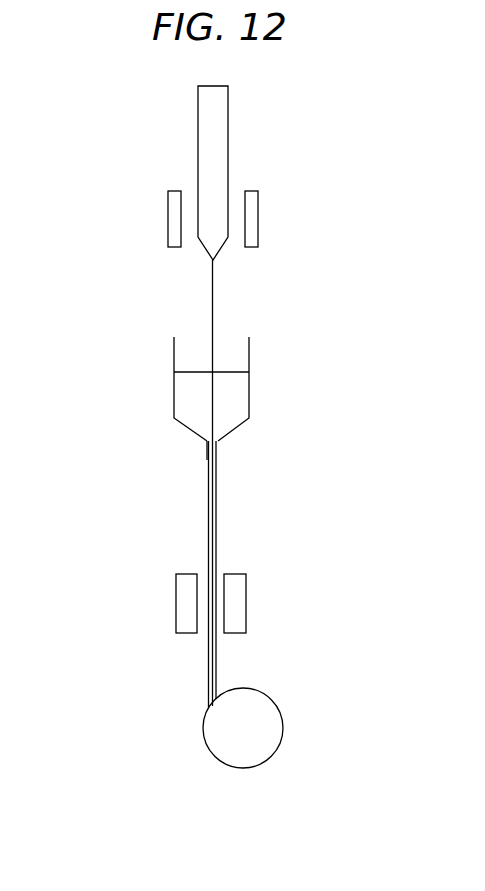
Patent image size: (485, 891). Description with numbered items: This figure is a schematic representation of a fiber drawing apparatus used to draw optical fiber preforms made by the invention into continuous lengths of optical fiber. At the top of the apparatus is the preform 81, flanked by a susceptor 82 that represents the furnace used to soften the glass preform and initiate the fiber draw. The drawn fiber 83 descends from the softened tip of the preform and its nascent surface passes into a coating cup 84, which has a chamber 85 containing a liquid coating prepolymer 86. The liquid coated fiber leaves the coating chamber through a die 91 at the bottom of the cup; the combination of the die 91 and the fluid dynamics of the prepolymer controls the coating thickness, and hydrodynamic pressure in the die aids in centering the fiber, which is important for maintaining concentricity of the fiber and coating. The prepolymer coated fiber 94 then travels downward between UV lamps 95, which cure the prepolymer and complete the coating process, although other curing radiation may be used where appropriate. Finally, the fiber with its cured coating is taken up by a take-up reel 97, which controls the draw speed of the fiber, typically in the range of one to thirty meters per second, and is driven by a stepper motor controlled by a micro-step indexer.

The preform 81 is at (228, 130).
The susceptor 82 is at (258, 222).
The drawn fiber 83 is at (212, 285).
The coating cup 84 is at (309, 407).
The chamber 85 is at (249, 345).
The coating prepolymer 86 is at (183, 405).
The die 91 is at (206, 444).
The prepolymer coated fiber 94 is at (216, 530).
The UV lamps 95 is at (176, 607).
The take-up reel 97 is at (276, 702).